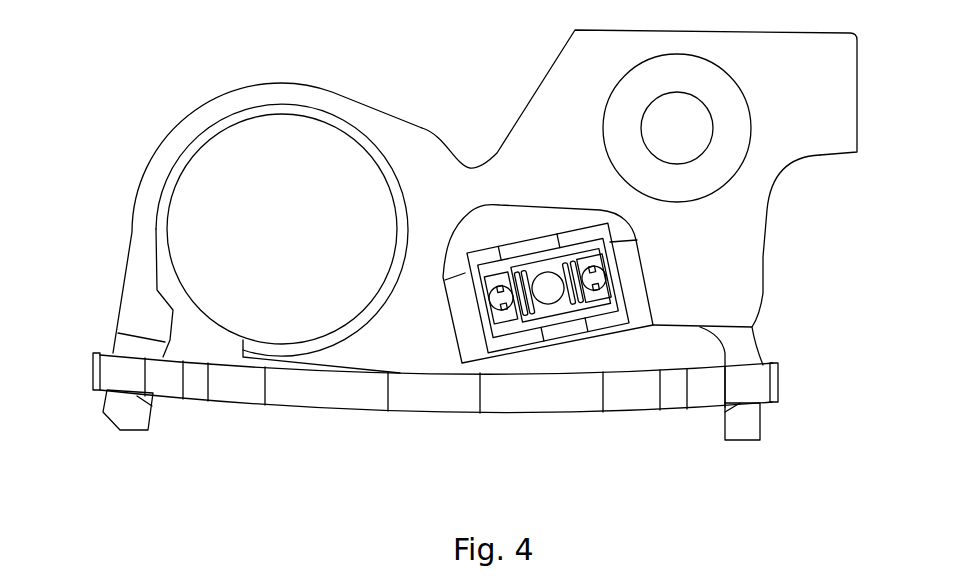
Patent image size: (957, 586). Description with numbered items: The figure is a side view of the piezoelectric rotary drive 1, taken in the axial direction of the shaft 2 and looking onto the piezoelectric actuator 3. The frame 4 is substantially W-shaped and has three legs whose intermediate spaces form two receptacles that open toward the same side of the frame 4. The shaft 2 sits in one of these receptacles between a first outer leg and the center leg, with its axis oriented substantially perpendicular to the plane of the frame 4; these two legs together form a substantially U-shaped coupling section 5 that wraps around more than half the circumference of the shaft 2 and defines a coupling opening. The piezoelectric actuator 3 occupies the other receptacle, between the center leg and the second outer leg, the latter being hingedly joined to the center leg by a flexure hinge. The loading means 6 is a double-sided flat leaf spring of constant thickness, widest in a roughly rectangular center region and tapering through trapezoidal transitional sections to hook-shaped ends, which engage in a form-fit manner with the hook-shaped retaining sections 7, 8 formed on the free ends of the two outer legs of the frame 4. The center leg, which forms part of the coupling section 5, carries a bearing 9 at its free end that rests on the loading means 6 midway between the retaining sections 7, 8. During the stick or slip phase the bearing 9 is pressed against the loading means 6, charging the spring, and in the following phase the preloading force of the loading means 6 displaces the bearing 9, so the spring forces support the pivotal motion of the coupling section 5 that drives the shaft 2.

The piezoelectric rotary drive 1 is at (617, 494).
The shaft 2 is at (312, 190).
The piezoelectric actuator 3 is at (528, 247).
The frame 4 is at (800, 273).
The coupling section 5 is at (148, 168).
The loading means 6 is at (280, 445).
The retaining section 7 is at (142, 415).
The retaining section 8 is at (743, 428).
The bearing 9 is at (440, 348).